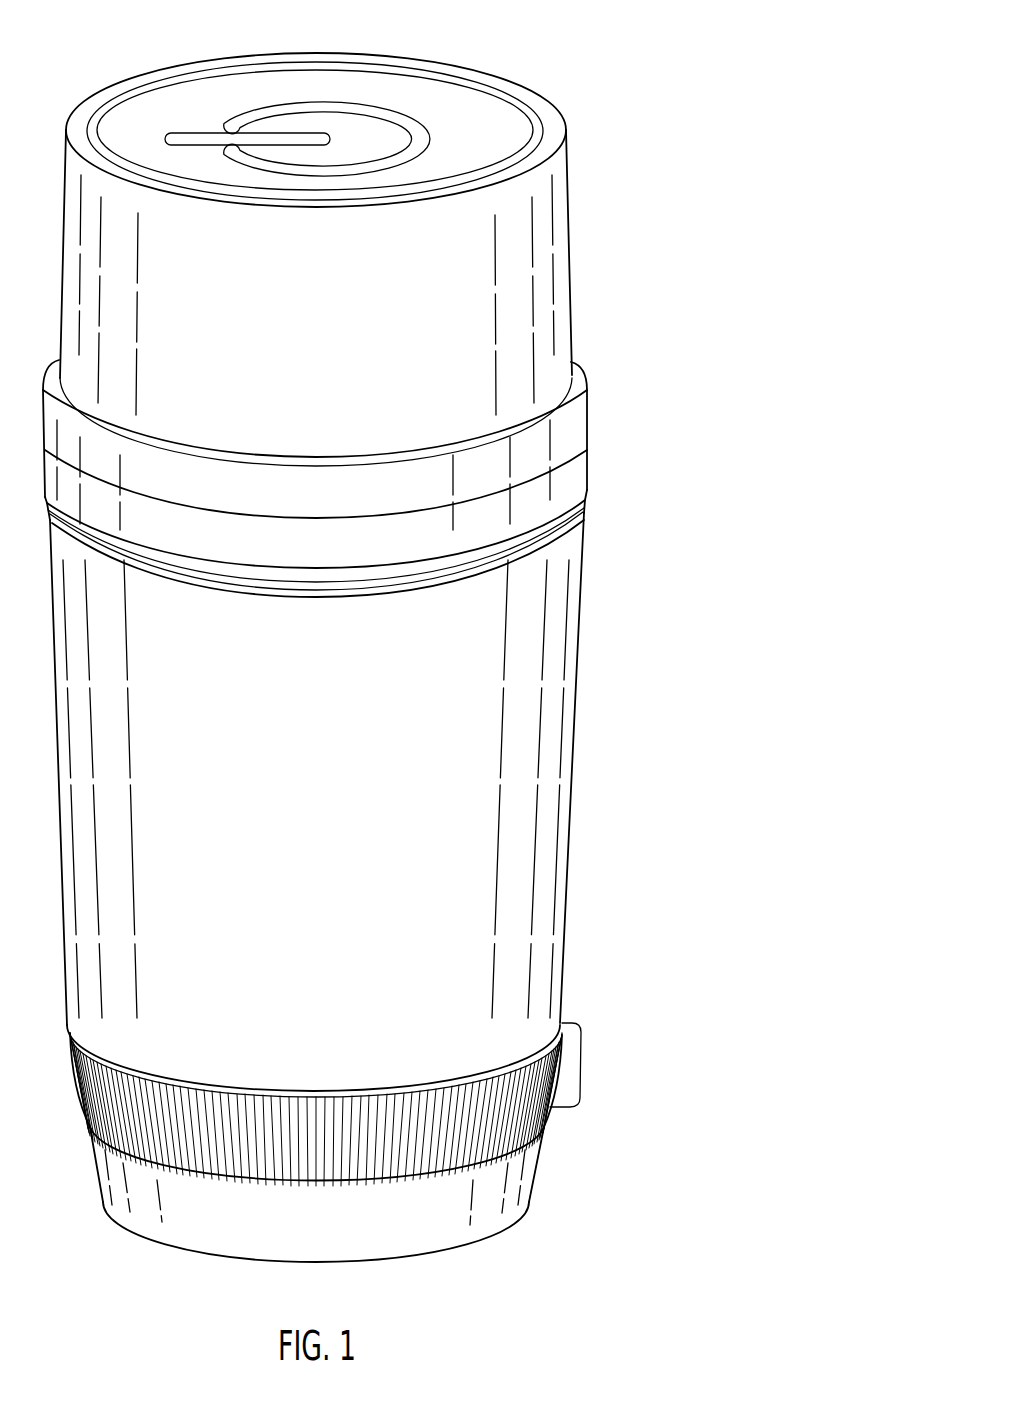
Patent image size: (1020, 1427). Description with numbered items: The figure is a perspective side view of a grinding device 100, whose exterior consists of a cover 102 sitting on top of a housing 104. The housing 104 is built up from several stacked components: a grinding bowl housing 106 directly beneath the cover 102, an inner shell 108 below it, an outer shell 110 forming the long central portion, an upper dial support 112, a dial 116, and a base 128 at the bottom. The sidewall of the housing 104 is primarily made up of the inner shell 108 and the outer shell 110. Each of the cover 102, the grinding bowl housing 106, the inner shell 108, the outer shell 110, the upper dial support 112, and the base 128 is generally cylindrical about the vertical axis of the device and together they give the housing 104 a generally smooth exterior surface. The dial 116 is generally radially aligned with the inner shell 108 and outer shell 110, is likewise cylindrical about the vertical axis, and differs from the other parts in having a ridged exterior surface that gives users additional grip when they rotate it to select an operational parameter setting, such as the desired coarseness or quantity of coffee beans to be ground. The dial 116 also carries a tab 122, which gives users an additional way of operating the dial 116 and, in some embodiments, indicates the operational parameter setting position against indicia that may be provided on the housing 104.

The grinding device 100 is at (702, 42).
The cover 102 is at (572, 269).
The housing 104 is at (743, 405).
The grinding bowl housing 106 is at (587, 465).
The inner shell 108 is at (583, 512).
The outer shell 110 is at (572, 751).
The upper dial support 112 is at (561, 1034).
The dial 116 is at (548, 1115).
The tab 122 is at (582, 1067).
The base 128 is at (528, 1197).